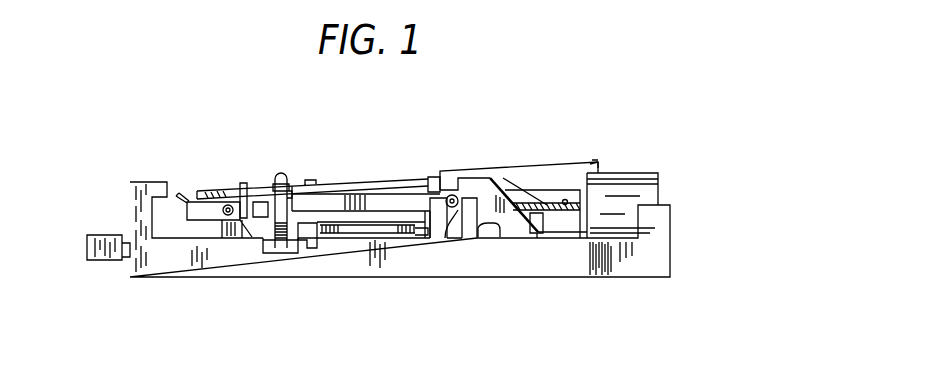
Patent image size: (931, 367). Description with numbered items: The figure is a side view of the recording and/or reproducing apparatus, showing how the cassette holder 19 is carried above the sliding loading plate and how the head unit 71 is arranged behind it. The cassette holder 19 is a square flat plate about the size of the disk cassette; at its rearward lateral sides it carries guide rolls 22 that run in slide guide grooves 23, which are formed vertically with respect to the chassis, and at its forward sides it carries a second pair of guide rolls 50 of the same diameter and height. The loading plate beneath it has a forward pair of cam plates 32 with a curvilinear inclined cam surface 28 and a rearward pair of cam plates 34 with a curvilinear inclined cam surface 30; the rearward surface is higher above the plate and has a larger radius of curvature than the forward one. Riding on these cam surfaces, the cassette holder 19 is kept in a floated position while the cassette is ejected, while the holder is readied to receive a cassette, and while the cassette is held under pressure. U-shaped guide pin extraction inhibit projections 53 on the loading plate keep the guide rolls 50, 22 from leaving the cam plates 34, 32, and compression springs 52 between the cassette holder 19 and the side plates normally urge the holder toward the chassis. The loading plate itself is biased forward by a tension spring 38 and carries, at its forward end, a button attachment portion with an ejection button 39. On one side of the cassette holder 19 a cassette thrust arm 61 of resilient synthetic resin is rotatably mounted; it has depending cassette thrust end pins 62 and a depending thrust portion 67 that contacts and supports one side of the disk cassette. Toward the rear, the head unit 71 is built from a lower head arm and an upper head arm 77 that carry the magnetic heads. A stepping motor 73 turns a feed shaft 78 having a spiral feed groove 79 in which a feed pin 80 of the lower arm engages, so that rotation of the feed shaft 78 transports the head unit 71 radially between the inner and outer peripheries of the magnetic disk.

The cassette holder 19 is at (385, 200).
The guide rolls 22 is at (457, 210).
The slide guide grooves 23 is at (446, 233).
The inclined cam surface 28 is at (264, 228).
The inclined cam surface 30 is at (497, 228).
The cam plates 32 is at (235, 240).
The cam plates 34 is at (484, 240).
The tension spring 38 is at (365, 230).
The ejection button 39 is at (88, 253).
The guide rolls 50 is at (226, 215).
The compression springs 52 is at (275, 252).
The guide pin extraction inhibit projections 53 is at (488, 190).
The cassette thrust arm 61 is at (343, 183).
The cassette thrust end pins 62 is at (197, 193).
The thrust portion 67 is at (245, 198).
The head unit 71 is at (600, 159).
The stepping motor 73 is at (650, 185).
The upper head arm 77 is at (540, 202).
The feed shaft 78 is at (565, 203).
The spiral feed groove 79 is at (567, 208).
The feed pin 80 is at (597, 162).